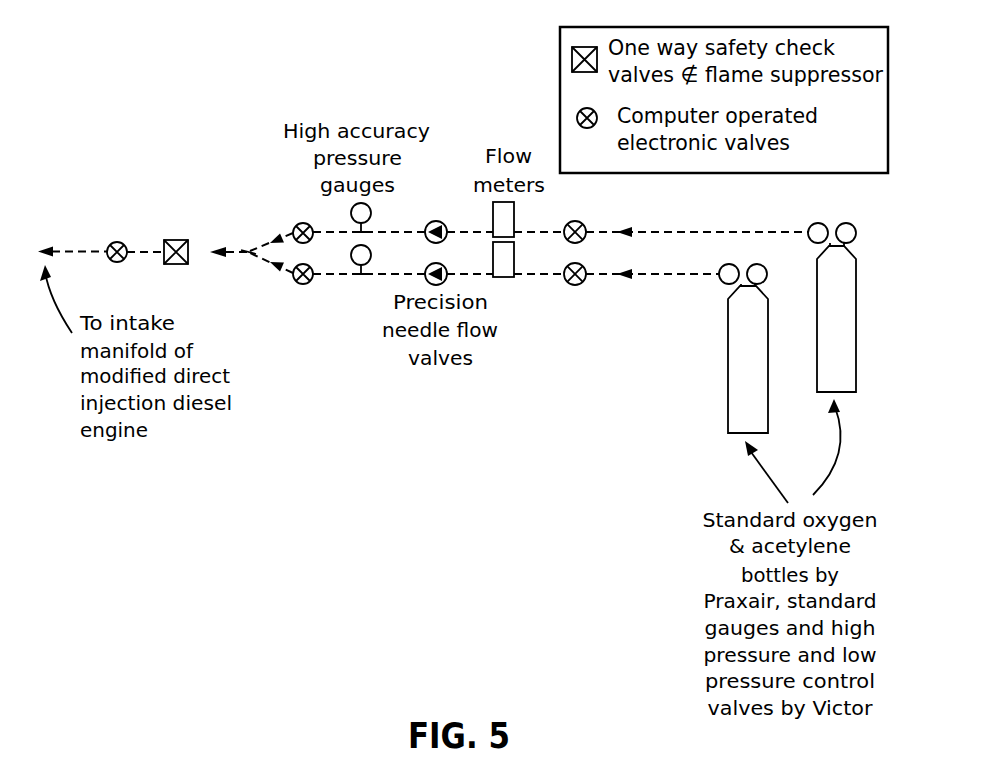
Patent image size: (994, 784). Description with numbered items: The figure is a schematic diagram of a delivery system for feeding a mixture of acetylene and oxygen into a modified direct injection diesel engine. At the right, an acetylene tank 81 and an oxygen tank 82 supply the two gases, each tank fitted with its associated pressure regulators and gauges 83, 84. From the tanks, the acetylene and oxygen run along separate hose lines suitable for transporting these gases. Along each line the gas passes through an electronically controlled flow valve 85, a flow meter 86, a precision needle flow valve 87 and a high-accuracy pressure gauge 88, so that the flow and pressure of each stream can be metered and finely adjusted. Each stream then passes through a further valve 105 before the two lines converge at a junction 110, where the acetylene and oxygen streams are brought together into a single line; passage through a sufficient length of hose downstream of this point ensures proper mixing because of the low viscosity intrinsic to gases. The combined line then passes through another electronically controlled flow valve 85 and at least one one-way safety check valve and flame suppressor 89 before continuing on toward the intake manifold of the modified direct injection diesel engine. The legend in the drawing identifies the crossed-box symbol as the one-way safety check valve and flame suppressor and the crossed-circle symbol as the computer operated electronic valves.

The acetylene tank 81 is at (728, 371).
The oxygen tank 82 is at (856, 288).
The pressure regulators and gauges 83 is at (764, 259).
The pressure regulators and gauges 84 is at (849, 217).
The electronically controlled flow valves 85 is at (115, 242).
The flow meters 86 is at (515, 217).
The precision needle flow valves 87 is at (441, 222).
The high-accuracy pressure gauges 88 is at (371, 210).
The one-way safety check valve and flame suppressor 89 is at (173, 240).
The computer operated electronic valve 105 is at (299, 224).
The mixing junction 110 is at (247, 250).